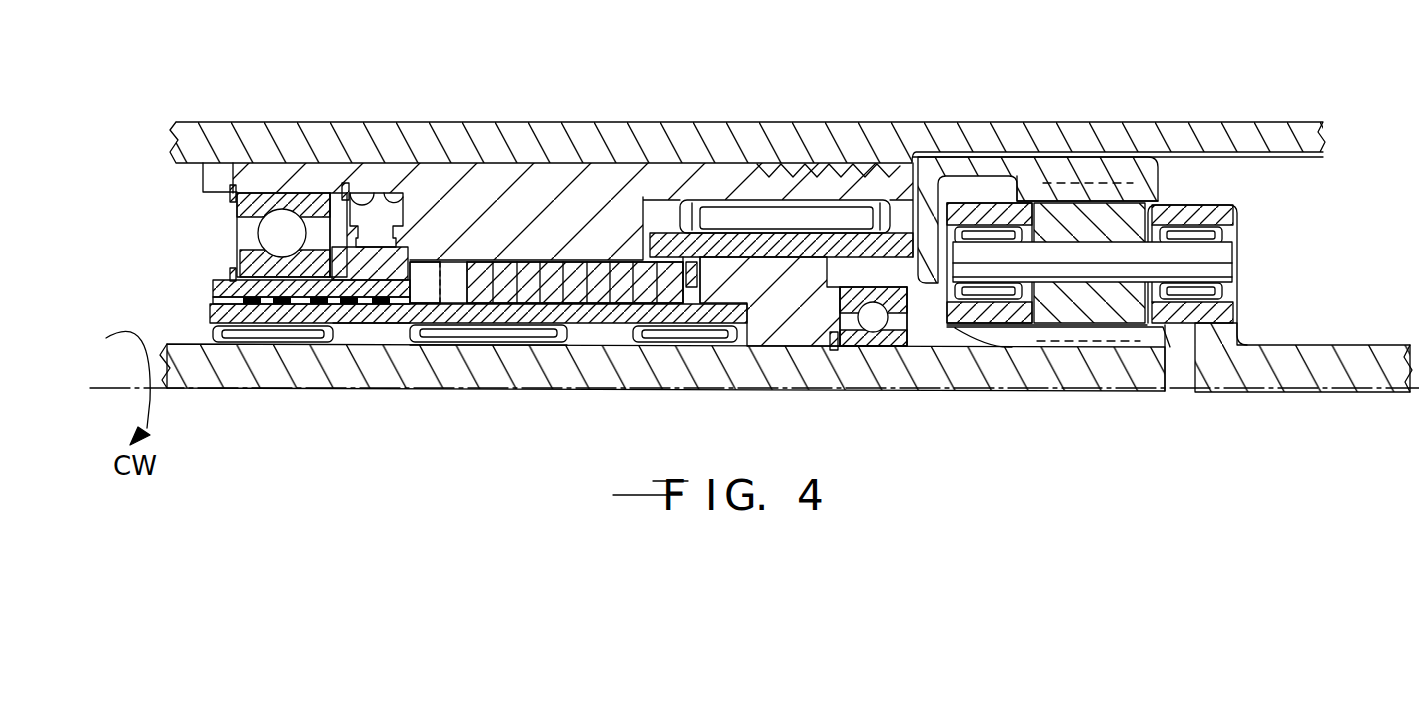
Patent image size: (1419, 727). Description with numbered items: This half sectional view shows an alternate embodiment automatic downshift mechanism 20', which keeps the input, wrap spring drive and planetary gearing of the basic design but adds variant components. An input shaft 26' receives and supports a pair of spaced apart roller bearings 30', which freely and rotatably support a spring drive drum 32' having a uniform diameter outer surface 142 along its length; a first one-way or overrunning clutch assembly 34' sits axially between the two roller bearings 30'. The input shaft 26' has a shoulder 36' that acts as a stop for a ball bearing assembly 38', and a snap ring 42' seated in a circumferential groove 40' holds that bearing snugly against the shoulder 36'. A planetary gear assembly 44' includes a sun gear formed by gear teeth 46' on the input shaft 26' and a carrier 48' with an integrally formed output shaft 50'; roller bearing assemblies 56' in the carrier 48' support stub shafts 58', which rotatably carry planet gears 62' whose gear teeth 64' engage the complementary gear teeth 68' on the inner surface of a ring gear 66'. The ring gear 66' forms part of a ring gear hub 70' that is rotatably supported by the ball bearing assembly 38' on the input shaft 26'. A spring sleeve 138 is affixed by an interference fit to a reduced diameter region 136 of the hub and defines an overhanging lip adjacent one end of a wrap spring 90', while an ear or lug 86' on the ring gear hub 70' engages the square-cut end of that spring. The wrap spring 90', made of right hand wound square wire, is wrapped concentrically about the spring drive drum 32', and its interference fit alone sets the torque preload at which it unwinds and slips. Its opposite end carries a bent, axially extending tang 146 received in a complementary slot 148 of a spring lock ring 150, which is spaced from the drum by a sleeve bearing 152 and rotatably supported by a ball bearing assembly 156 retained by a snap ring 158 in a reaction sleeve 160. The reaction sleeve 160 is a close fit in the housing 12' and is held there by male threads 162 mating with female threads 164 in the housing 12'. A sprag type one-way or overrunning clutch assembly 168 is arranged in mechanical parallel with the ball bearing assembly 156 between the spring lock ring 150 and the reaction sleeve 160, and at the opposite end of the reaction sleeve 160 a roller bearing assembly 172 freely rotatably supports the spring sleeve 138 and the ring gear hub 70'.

The housing 12' is at (747, 101).
The automatic downshift mechanism 20' is at (749, 91).
The input shaft 26' is at (662, 393).
The roller bearings 30' is at (475, 394).
The spring drive drum 32' is at (371, 378).
The first one-way or overrunning clutch assembly 34' is at (488, 394).
The shoulder 36' is at (917, 368).
The ball bearing assembly 38' is at (885, 377).
The circumferential groove 40' is at (849, 375).
The snap ring 42' is at (790, 390).
The planetary gear assembly 44' is at (1252, 257).
The gear teeth 46' is at (1058, 390).
The carrier 48' is at (1209, 244).
The output shaft 50' is at (1288, 400).
The roller bearing assemblies 56' is at (1248, 275).
The stub shafts 58' is at (1145, 265).
The planet gears 62' is at (1150, 130).
The gear teeth 64' is at (1115, 189).
The ring gear 66' is at (1092, 110).
The gear teeth 68' is at (1017, 188).
The ring gear hub 70' is at (1118, 88).
The ear or lug 86' is at (721, 189).
The wrap spring 90' is at (546, 249).
The reduced diameter region 136 is at (787, 303).
The spring sleeve 138 is at (922, 155).
The outer surface 142 is at (215, 300).
The tang 146 is at (453, 275).
The slot 148 is at (420, 262).
The spring lock ring 150 is at (228, 282).
The sleeve bearing 152 is at (262, 300).
The ball bearing assembly 156 is at (250, 208).
The snap ring 158 is at (247, 180).
The reaction sleeve 160 is at (540, 173).
The male threads 162 is at (853, 235).
The female threads 164 is at (825, 168).
The sprag type one-way or overrunning clutch assembly 168 is at (358, 192).
The roller bearing assembly 172 is at (765, 217).